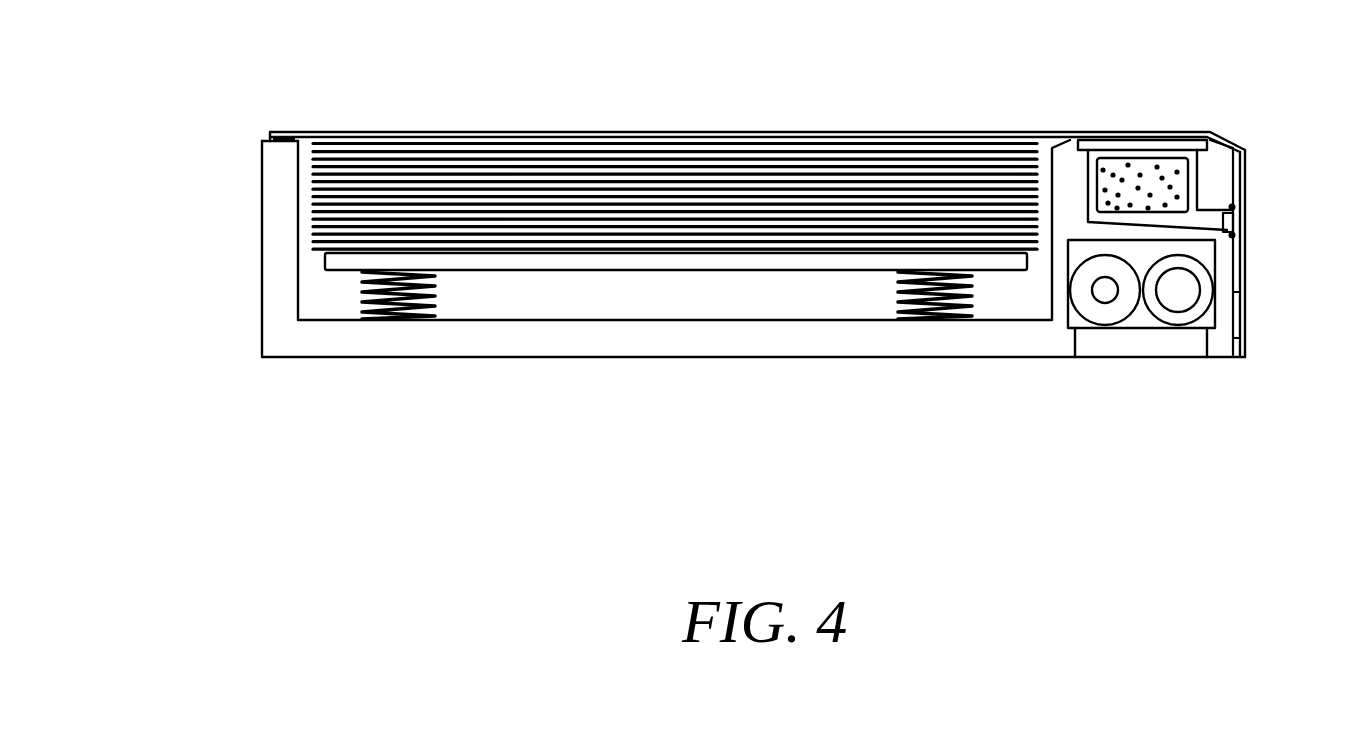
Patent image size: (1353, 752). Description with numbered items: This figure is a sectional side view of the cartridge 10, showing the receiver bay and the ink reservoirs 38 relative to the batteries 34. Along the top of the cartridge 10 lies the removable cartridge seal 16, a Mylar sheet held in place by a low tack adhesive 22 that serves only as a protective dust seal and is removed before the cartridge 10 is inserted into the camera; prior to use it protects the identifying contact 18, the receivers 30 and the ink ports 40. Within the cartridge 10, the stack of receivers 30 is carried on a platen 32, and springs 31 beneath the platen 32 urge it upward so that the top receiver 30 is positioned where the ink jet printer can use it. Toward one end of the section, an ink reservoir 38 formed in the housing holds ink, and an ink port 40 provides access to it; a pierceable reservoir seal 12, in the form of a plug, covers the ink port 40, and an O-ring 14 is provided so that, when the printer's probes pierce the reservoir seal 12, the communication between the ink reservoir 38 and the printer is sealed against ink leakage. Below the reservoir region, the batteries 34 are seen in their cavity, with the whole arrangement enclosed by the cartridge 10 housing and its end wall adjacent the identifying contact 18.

The cartridge 10 is at (133, 269).
The reservoir seal 12 is at (1232, 235).
The O-ring 14 is at (1232, 207).
The cartridge seal 16 is at (403, 130).
The identifying contact 18 is at (1243, 322).
The low tack adhesive 22 is at (265, 138).
The receiver 30 is at (602, 175).
The spring 31 is at (362, 293).
The platen 32 is at (658, 272).
The battery 34 is at (1178, 320).
The ink reservoir 38 is at (1142, 167).
The ink port 40 is at (1222, 232).